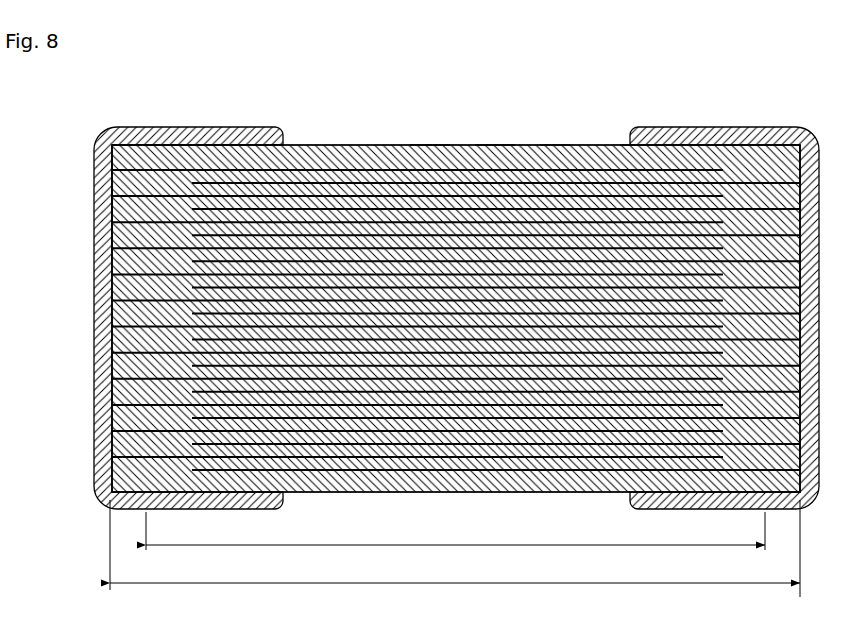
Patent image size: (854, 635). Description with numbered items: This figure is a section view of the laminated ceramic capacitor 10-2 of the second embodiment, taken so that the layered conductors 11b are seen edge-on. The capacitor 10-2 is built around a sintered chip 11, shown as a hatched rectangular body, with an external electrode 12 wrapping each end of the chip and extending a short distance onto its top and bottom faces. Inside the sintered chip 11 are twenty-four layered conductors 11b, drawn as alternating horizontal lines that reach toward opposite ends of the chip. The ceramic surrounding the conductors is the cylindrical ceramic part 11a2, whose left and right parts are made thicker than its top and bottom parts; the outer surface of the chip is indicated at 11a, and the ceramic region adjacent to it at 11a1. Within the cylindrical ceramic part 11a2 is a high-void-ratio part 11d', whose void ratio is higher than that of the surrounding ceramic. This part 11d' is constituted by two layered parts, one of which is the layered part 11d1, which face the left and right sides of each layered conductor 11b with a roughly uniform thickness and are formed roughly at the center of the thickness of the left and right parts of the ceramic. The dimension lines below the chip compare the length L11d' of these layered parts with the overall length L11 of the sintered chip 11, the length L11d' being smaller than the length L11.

The laminated ceramic capacitor 10-2 is at (423, 294).
The sintered chip 11 is at (382, 146).
The first main surface of ceramic body 11a is at (112, 147).
The layered conductor 11b is at (112, 203).
The first region of main surface 11a1 is at (428, 146).
The cylindrical ceramic part 11a2 is at (493, 146).
The high-void-ratio part 11d' is at (567, 113).
The layered part 11d1 is at (627, 146).
The external electrodes 12 is at (186, 128).
The length of layered parts L11d' is at (455, 544).
The length of sintered chip L11 is at (455, 557).